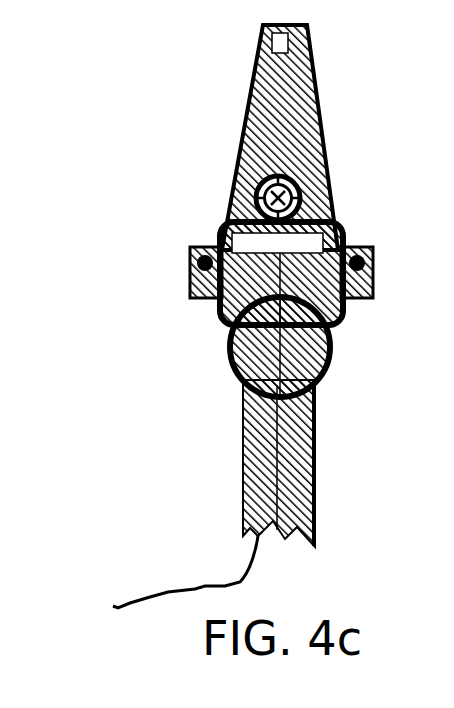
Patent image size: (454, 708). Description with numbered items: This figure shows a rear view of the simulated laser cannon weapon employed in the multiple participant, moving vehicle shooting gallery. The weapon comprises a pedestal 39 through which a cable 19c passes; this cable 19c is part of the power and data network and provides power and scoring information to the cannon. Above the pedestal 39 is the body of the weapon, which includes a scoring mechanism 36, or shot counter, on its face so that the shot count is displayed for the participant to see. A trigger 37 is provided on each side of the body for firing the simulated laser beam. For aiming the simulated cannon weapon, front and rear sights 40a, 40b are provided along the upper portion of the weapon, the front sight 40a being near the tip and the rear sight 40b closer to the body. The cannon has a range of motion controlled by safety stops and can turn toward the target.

The front sight 40a is at (302, 40).
The rear sight 40b is at (330, 192).
The scoring mechanism 36 is at (307, 247).
The trigger 37 is at (190, 268).
The pedestal 39 is at (243, 462).
The cable 19c is at (166, 592).